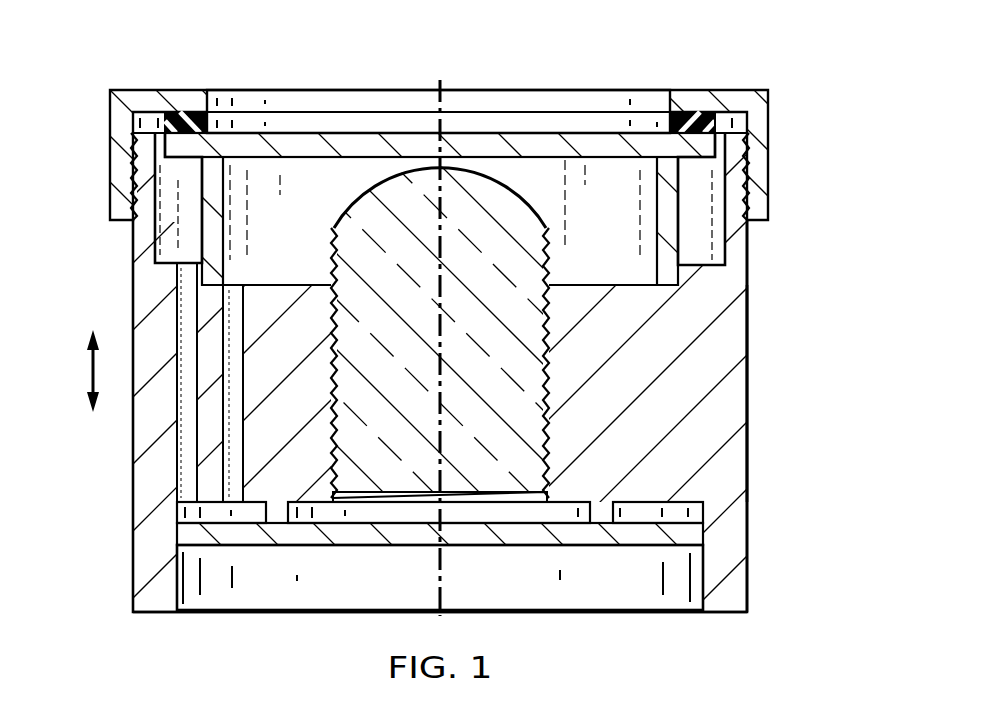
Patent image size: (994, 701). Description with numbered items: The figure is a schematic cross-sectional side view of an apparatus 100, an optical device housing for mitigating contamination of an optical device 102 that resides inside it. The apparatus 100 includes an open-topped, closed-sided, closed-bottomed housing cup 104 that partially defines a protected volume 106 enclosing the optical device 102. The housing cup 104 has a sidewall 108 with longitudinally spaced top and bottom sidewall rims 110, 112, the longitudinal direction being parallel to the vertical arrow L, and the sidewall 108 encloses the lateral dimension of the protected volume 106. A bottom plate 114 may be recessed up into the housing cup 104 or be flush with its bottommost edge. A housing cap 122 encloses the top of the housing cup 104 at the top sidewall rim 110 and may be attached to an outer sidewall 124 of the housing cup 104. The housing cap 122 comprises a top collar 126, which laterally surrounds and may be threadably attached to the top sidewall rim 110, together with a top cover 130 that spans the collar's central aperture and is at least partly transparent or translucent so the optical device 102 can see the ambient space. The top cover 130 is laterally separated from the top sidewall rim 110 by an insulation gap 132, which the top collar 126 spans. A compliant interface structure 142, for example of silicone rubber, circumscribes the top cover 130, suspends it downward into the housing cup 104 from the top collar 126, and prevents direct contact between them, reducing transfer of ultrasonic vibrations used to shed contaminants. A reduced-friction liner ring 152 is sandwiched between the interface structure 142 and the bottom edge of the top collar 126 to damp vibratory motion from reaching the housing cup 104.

The apparatus 100 is at (226, 53).
The optical device 102 is at (357, 207).
The housing cup 104 is at (105, 484).
The protected volume 106 is at (585, 163).
The sidewall 108 is at (758, 407).
The top sidewall rim 110 is at (758, 169).
The bottom sidewall rim 112 is at (758, 602).
The bottom plate 114 is at (531, 547).
The housing cap 122 is at (281, 74).
The outer sidewall 124 is at (770, 367).
The top collar 126 is at (137, 90).
The top cover 130 is at (527, 145).
The insulation gap 132 is at (155, 145).
The interface structure 142 is at (708, 122).
The liner ring 152 is at (690, 112).